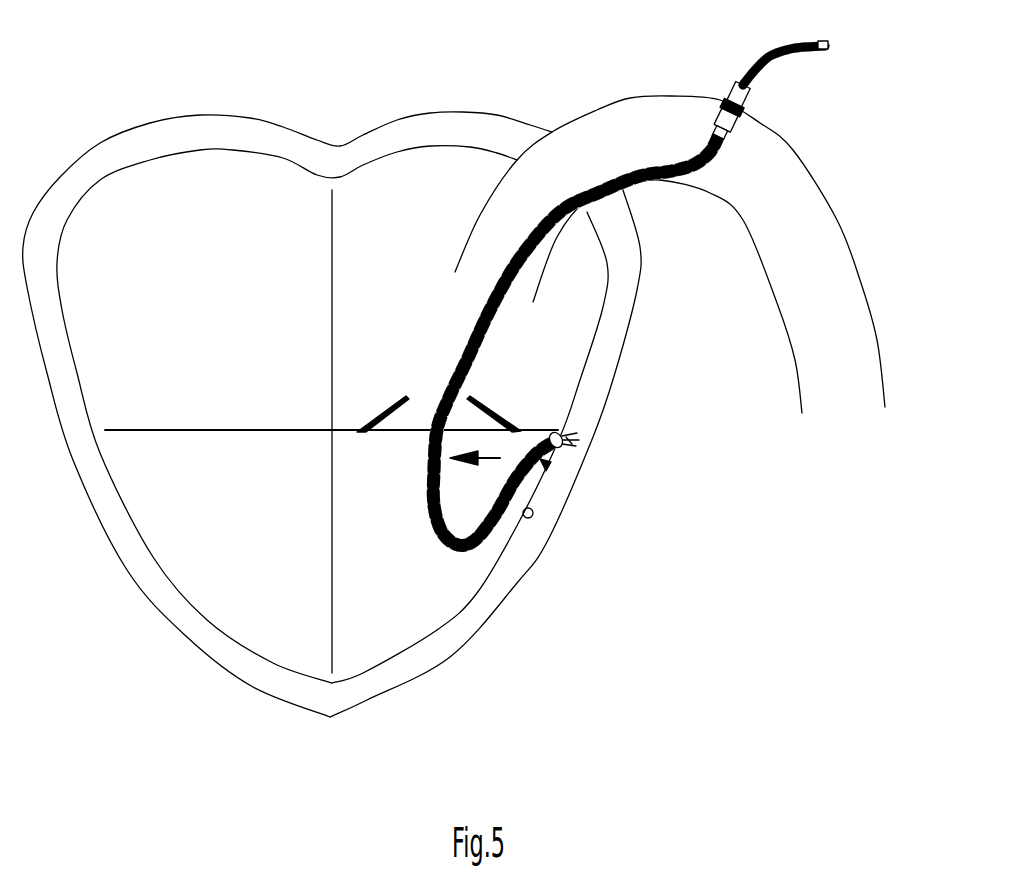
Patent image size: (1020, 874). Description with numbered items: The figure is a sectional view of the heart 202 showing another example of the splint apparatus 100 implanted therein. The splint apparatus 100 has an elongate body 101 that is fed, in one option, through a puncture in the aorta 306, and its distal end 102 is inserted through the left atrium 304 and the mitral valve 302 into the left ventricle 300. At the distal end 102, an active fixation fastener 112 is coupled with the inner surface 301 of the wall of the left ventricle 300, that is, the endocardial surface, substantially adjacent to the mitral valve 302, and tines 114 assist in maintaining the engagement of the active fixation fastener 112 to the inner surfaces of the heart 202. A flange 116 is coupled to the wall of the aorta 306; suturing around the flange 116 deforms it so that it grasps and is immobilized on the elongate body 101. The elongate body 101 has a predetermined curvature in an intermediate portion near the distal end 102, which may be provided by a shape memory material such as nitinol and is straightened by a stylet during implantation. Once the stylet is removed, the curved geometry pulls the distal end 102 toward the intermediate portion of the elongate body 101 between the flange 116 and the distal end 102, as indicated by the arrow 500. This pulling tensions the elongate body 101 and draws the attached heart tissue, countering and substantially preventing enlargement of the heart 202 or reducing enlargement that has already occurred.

The splint apparatus 100 is at (817, 37).
The elongate body 101 is at (457, 551).
The distal end 102 is at (548, 460).
The active fixation fastener 112 is at (562, 438).
The tines 114 is at (551, 452).
The flange 116 is at (748, 93).
The heart 202 is at (143, 572).
The left ventricle 300 is at (365, 647).
The inner surface 301 is at (531, 518).
The mitral valve 302 is at (503, 418).
The left atrium 304 is at (380, 190).
The aorta 306 is at (682, 68).
The arrow 500 is at (489, 460).